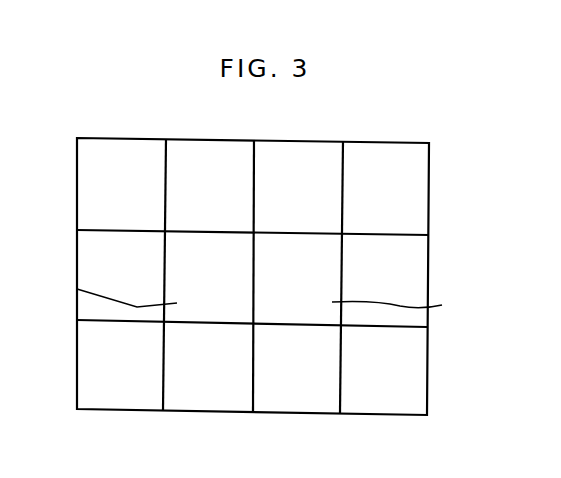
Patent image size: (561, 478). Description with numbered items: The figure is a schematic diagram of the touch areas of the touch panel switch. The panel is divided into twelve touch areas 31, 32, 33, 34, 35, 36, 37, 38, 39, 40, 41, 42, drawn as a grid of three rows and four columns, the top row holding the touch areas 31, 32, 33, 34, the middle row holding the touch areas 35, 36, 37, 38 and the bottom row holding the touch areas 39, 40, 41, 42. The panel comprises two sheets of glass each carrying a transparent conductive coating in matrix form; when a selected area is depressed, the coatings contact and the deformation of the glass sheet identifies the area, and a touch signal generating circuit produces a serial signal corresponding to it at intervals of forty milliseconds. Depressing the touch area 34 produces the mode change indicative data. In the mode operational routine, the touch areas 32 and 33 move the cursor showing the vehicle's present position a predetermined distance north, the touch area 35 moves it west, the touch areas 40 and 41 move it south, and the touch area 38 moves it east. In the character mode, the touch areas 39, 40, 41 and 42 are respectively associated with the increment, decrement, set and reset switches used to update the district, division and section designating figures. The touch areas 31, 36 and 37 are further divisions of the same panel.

The touch area 31 is at (125, 151).
The touch area 32 is at (208, 151).
The touch area 33 is at (302, 151).
The touch area 34 is at (393, 153).
The touch area 35 is at (87, 253).
The touch area 36 is at (78, 289).
The touch area 37 is at (403, 307).
The touch area 38 is at (418, 253).
The touch area 39 is at (148, 403).
The touch area 40 is at (238, 403).
The touch area 41 is at (322, 406).
The touch area 42 is at (408, 406).